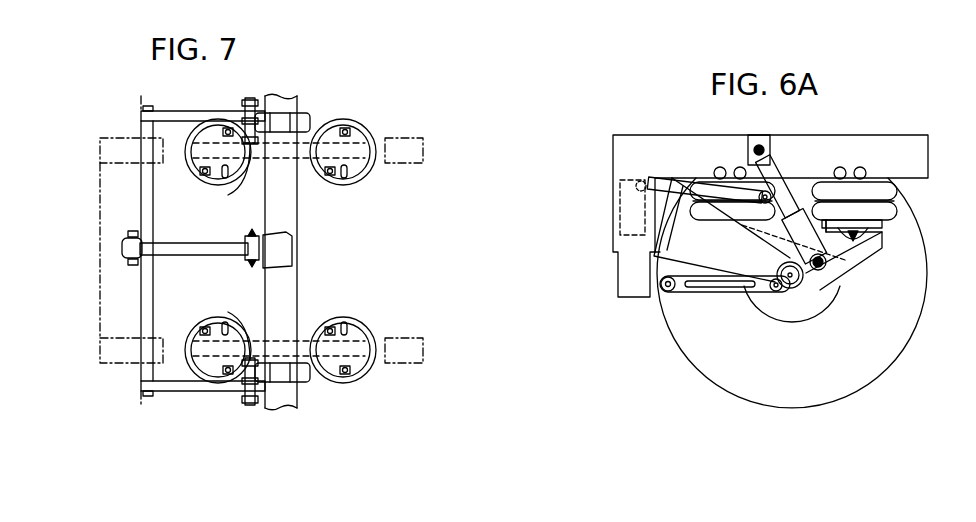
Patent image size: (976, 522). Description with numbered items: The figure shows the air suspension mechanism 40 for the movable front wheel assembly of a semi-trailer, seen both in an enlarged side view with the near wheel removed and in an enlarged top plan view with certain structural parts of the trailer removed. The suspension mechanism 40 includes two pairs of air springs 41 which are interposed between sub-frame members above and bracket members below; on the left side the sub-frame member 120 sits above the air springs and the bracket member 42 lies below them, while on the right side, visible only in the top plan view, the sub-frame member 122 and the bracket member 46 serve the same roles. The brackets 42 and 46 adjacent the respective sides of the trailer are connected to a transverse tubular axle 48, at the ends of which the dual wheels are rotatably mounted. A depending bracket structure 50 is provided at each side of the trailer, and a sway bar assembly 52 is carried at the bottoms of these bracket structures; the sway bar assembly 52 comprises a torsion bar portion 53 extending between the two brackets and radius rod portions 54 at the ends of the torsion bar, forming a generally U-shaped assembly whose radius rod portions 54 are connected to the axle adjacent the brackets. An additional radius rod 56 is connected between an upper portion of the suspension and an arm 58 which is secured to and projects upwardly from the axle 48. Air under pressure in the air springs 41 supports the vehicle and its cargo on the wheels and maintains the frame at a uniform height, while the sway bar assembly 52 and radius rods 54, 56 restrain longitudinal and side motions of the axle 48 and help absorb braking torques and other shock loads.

In FIG. 7, the sub-frame member 120 is at (122, 352).
In FIG. 6A, the sub-frame member 120 is at (890, 145).
In FIG. 7, the sub-frame member 122 is at (114, 138).
In FIG. 7, the air suspension mechanism 40 is at (346, 258).
In FIG. 6A, the air suspension mechanism 40 is at (852, 258).
In FIG. 6A, the air springs 41 is at (893, 210).
In FIG. 7, the bracket member 42 is at (299, 335).
In FIG. 6A, the bracket member 42 is at (862, 235).
In FIG. 7, the bracket member 46 is at (289, 162).
In FIG. 7, the transverse tubular axle 48 is at (277, 205).
In FIG. 6A, the transverse tubular axle 48 is at (808, 290).
In FIG. 6A, the depending bracket structure 50 is at (622, 240).
In FIG. 6A, the sway bar assembly 52 is at (666, 292).
In FIG. 7, the torsion bar portion 53 is at (154, 210).
In FIG. 7, the radius rod portions 54 is at (184, 391).
In FIG. 6A, the radius rod portions 54 is at (712, 286).
In FIG. 7, the radius rod 56 is at (210, 251).
In FIG. 6A, the radius rod 56 is at (683, 192).
In FIG. 7, the arm 58 is at (281, 241).
In FIG. 6A, the arm 58 is at (772, 235).